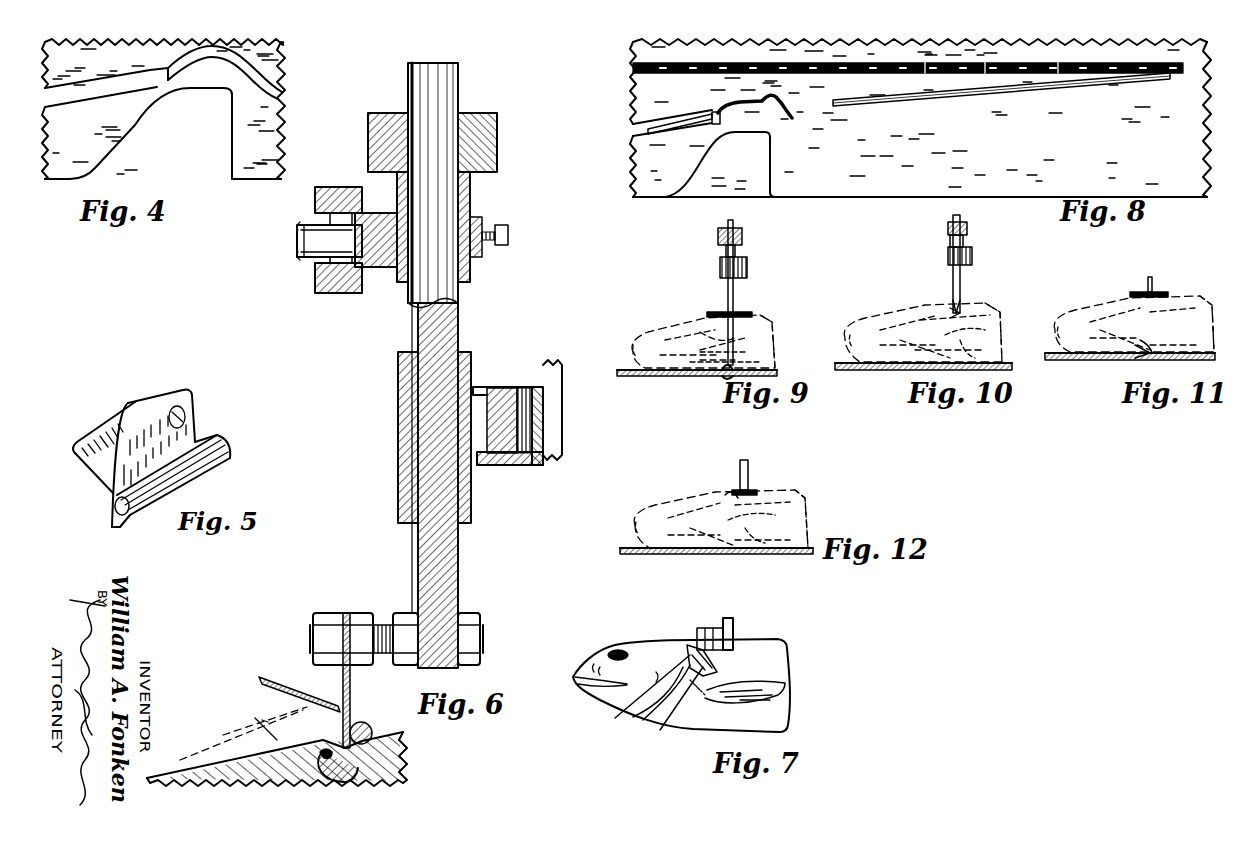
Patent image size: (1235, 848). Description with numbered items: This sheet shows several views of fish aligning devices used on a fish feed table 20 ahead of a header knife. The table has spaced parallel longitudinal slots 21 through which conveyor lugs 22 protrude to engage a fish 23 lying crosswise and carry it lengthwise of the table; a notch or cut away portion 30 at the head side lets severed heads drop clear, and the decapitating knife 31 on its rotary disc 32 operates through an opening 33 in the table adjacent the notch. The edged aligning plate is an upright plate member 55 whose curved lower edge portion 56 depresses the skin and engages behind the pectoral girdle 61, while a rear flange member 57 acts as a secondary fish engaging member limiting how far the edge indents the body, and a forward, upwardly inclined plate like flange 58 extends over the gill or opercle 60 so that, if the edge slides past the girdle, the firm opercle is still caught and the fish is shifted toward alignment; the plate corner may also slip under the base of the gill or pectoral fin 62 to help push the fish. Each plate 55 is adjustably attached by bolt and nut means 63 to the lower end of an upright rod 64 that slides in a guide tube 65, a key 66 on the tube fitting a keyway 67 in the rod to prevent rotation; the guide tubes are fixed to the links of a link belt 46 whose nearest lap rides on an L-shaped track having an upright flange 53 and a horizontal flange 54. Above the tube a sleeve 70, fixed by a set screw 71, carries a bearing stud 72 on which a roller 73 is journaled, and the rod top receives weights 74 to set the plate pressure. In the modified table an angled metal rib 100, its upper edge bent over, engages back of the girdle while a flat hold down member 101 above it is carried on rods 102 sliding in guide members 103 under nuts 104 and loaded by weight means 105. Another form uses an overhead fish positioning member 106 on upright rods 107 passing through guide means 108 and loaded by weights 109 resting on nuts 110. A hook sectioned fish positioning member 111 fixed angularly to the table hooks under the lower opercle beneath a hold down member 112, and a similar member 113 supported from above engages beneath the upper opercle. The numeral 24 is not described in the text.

In FIG. 4, the feed table 20 is at (284, 47).
In FIG. 8, the feed table 20 is at (866, 188).
In FIG. 9, the feed table 20 is at (662, 376).
In FIG. 10, the feed table 20 is at (888, 370).
In FIG. 11, the feed table 20 is at (1093, 360).
In FIG. 12, the feed table 20 is at (663, 554).
In FIG. 8, the longitudinal slots 21 is at (848, 62).
In FIG. 9, the longitudinal slots 21 is at (776, 370).
In FIG. 10, the longitudinal slots 21 is at (995, 363).
In FIG. 11, the longitudinal slots 21 is at (1193, 360).
In FIG. 12, the longitudinal slots 21 is at (793, 554).
In FIG. 8, the conveyor lugs 22 is at (1058, 62).
In FIG. 6, the fish 23 is at (393, 743).
In FIG. 9, the fish 23 is at (770, 322).
In FIG. 10, the fish 23 is at (1000, 316).
In FIG. 11, the fish 23 is at (1200, 300).
In FIG. 12, the fish 23 is at (800, 500).
In FIG. 7, the fish 23 is at (790, 700).
In FIG. 8, the strip edge 24 is at (922, 62).
In FIG. 4, the notch or cut away portion 30 is at (217, 138).
In FIG. 8, the notch or cut away portion 30 is at (762, 165).
In FIG. 8, the decapitating knife 31 is at (717, 110).
In FIG. 8, the rotary disc 32 is at (686, 118).
In FIG. 4, the opening in the table 33 is at (258, 83).
In FIG. 8, the opening in the table 33 is at (645, 136).
In FIG. 6, the link belt 46 is at (520, 386).
In FIG. 6, the upright flange 53 is at (546, 420).
In FIG. 6, the horizontal flange 54 is at (505, 464).
In FIG. 6, the upright plate member 55 is at (353, 693).
In FIG. 5, the upright plate member 55 is at (160, 420).
In FIG. 7, the upright plate member 55 is at (715, 668).
In FIG. 6, the curved lower edge portion 56 is at (404, 767).
In FIG. 5, the curved lower edge portion 56 is at (208, 488).
In FIG. 6, the flange member 57 is at (367, 726).
In FIG. 5, the flange member 57 is at (237, 451).
In FIG. 6, the plate like flange 58 is at (280, 680).
In FIG. 5, the plate like flange 58 is at (100, 443).
In FIG. 7, the plate like flange 58 is at (616, 716).
In FIG. 6, the gill or opercle 60 is at (263, 720).
In FIG. 9, the gill or opercle 60 is at (703, 341).
In FIG. 10, the gill or opercle 60 is at (923, 332).
In FIG. 11, the gill or opercle 60 is at (1134, 324).
In FIG. 12, the gill or opercle 60 is at (721, 519).
In FIG. 7, the gill or opercle 60 is at (697, 670).
In FIG. 6, the pectoral girdle 61 is at (320, 758).
In FIG. 9, the pectoral girdle 61 is at (722, 374).
In FIG. 10, the pectoral girdle 61 is at (952, 310).
In FIG. 7, the pectoral girdle 61 is at (668, 732).
In FIG. 10, the gill or pectoral fin 62 is at (965, 342).
In FIG. 12, the gill or pectoral fin 62 is at (754, 525).
In FIG. 7, the gill or pectoral fin 62 is at (707, 686).
In FIG. 6, the bolt and nut means 63 is at (460, 621).
In FIG. 6, the upright rod 64 is at (460, 562).
In FIG. 7, the upright rod 64 is at (734, 625).
In FIG. 6, the guide tube 65 is at (473, 513).
In FIG. 6, the key 66 is at (400, 506).
In FIG. 6, the keyway 67 is at (411, 548).
In FIG. 6, the sleeve 70 is at (471, 274).
In FIG. 6, the set screw 71 is at (492, 230).
In FIG. 6, the bearing stud 72 is at (300, 246).
In FIG. 6, the roller 73 is at (340, 187).
In FIG. 6, the weights 74 is at (498, 147).
In FIG. 8, the metal rib 100 is at (1087, 86).
In FIG. 9, the metal rib 100 is at (742, 364).
In FIG. 9, the hold down member 101 is at (745, 311).
In FIG. 9, the rods 102 is at (727, 285).
In FIG. 9, the guide members 103 is at (718, 268).
In FIG. 9, the nuts 104 is at (737, 248).
In FIG. 9, the weight means 105 is at (716, 237).
In FIG. 10, the fish positioning member 106 is at (962, 310).
In FIG. 10, the upright rods 107 is at (961, 275).
In FIG. 10, the guide means 108 is at (973, 258).
In FIG. 10, the weights 109 is at (968, 228).
In FIG. 10, the nuts 110 is at (965, 240).
In FIG. 11, the fish positioning member 111 is at (1152, 348).
In FIG. 11, the hold down member 112 is at (1145, 292).
In FIG. 12, the fish positioning member 113 is at (735, 490).